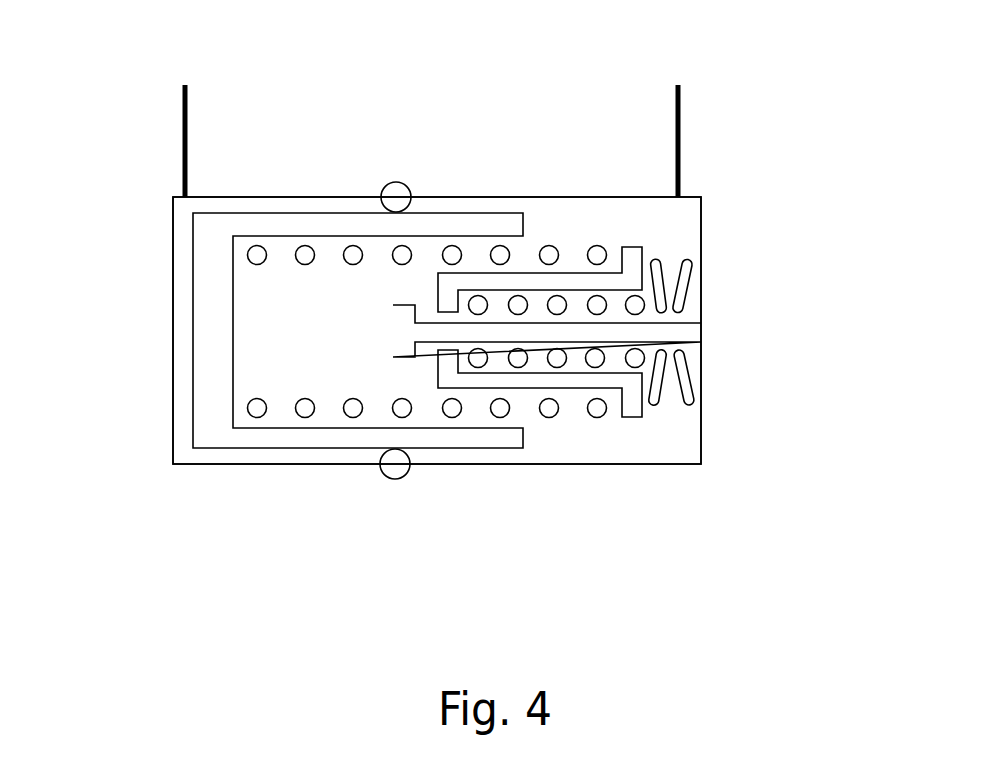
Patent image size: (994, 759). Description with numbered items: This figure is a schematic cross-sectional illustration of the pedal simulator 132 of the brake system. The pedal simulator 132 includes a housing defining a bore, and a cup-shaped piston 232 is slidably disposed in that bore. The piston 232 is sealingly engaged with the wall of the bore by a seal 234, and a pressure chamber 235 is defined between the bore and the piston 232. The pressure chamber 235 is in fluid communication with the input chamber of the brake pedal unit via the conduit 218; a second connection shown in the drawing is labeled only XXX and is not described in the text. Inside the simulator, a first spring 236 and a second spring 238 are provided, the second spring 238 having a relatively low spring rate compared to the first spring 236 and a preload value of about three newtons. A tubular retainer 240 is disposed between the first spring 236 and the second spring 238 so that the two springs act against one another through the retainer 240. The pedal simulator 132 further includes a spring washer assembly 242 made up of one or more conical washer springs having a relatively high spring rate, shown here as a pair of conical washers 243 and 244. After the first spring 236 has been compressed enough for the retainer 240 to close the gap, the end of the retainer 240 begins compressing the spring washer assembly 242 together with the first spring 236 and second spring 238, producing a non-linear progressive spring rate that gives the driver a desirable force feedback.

The pedal simulator 132 is at (846, 190).
The conduit 218 is at (181, 148).
The feed lead XXX is at (680, 128).
The piston 232 is at (305, 228).
The seal 234 is at (395, 467).
The pressure chamber 235 is at (182, 378).
The first spring 236 is at (298, 404).
The second spring 238 is at (598, 305).
The tubular retainer 240 is at (480, 280).
The spring washer assembly 242 is at (697, 305).
The conical washer 243 is at (652, 405).
The conical washer 244 is at (687, 407).